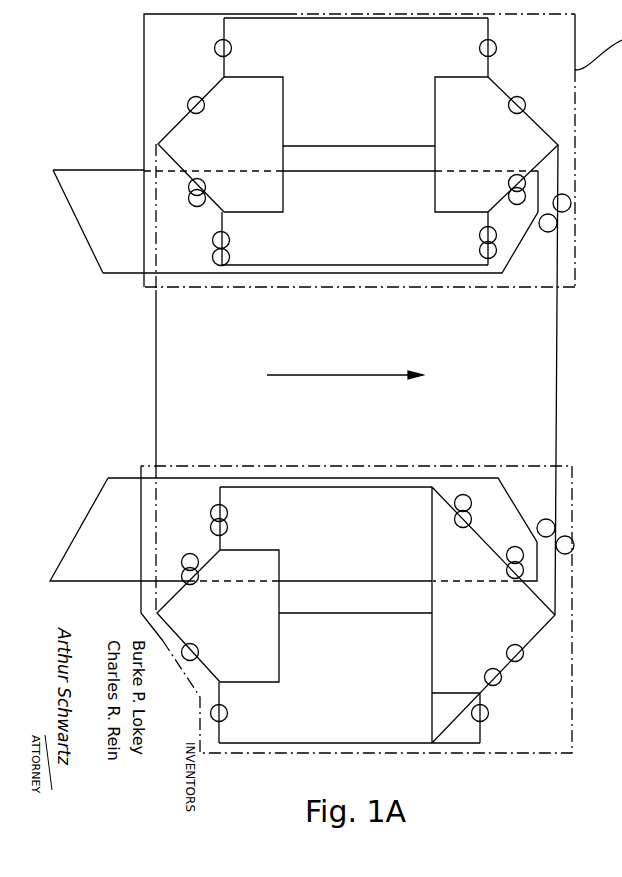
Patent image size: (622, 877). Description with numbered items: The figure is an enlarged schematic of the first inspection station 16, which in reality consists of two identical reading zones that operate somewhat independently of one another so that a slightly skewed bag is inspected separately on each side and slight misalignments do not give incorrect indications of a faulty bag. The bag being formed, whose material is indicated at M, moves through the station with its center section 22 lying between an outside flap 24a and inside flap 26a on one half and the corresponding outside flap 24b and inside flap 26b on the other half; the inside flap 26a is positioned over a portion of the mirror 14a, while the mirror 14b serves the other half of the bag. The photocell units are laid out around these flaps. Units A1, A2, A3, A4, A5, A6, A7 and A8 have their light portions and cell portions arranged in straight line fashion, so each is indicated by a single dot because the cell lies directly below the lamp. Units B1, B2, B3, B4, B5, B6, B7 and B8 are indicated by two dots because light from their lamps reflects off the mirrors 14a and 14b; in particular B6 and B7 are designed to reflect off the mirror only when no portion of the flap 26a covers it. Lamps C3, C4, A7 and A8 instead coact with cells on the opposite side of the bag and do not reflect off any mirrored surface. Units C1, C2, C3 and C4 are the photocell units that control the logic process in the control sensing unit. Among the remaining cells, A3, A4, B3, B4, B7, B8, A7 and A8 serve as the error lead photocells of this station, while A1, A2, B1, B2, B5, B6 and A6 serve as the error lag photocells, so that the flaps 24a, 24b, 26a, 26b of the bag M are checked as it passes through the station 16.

The mirror 14a is at (118, 486).
The mirror 14b is at (295, 243).
The inspection station 16 is at (573, 672).
The center section 22 is at (553, 392).
The outside flap 24a is at (381, 614).
The outside flap 24b is at (383, 167).
The inside flap 26a is at (322, 497).
The inside flap 26b is at (337, 256).
The material M is at (98, 221).
The photocell unit A1 is at (208, 53).
The photocell unit A2 is at (182, 97).
The photocell unit A3 is at (505, 53).
The photocell unit A4 is at (532, 97).
The photocell unit A5 is at (206, 651).
The photocell unit A6 is at (234, 718).
The photocell unit A7 is at (520, 665).
The photocell unit A8 is at (496, 719).
The photocell unit B1 is at (184, 195).
The photocell unit B2 is at (238, 248).
The photocell unit B3 is at (492, 190).
The photocell unit B4 is at (470, 243).
The photocell unit B5 is at (235, 520).
The photocell unit B6 is at (203, 585).
The photocell unit B7 is at (480, 511).
The photocell unit B8 is at (498, 566).
The photocell unit C1 is at (581, 209).
The photocell unit C2 is at (541, 247).
The photocell unit C3 is at (581, 551).
The photocell unit C4 is at (540, 513).